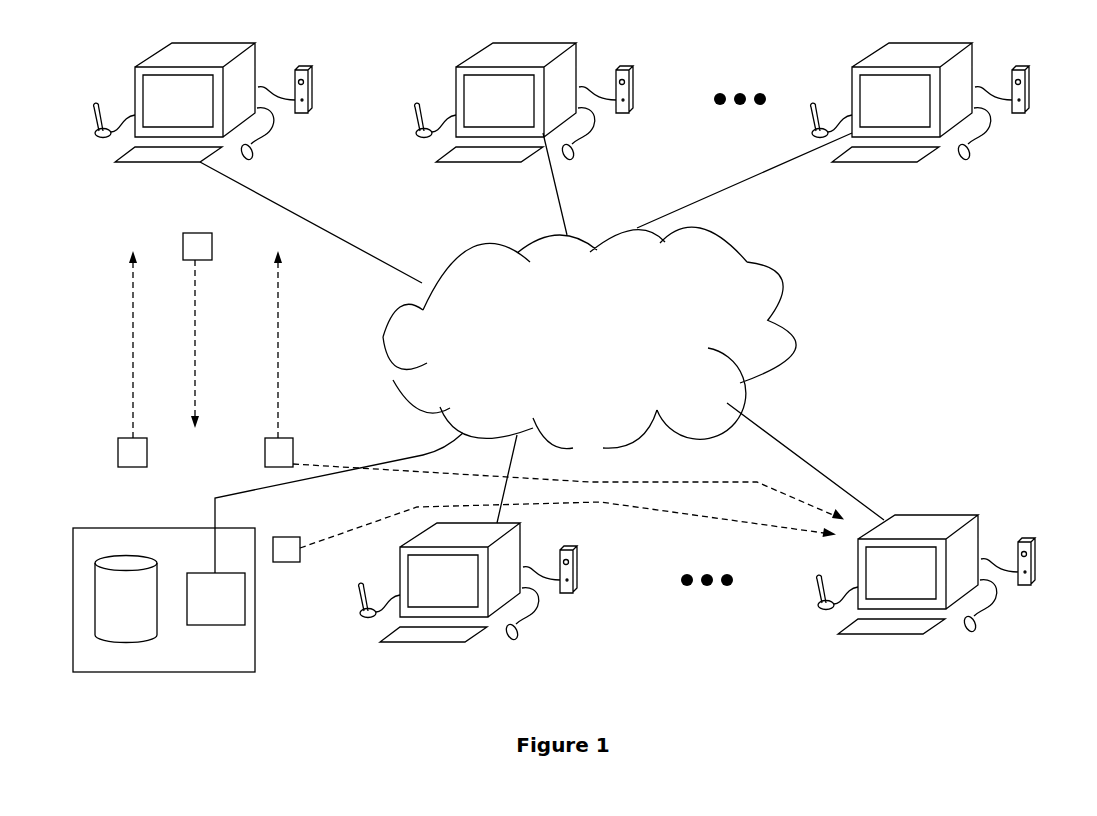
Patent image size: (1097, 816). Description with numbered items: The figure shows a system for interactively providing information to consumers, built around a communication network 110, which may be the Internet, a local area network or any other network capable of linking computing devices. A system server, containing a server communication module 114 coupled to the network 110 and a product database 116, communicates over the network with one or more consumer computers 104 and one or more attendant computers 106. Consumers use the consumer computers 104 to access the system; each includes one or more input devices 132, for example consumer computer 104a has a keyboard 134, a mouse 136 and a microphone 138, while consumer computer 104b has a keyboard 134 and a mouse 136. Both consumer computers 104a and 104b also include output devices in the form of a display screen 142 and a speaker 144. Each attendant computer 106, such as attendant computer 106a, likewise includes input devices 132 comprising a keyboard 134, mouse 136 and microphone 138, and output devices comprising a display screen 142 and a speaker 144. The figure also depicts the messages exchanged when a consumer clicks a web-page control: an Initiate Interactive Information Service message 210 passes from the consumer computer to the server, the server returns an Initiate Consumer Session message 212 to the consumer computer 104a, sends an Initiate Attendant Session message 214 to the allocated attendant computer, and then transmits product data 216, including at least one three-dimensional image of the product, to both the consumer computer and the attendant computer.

The consumer computer 104a is at (238, 43).
The consumer computer 104b is at (559, 43).
The consumer computer 104 is at (957, 43).
The attendant computer 106a is at (507, 666).
The attendant computer 106 is at (930, 662).
The communication network 110 is at (600, 346).
The server communication module 114 is at (207, 611).
The product database 116 is at (115, 613).
The input devices 132 is at (120, 161).
The keyboard 134 is at (165, 162).
The mouse 136 is at (253, 150).
The microphone 138 is at (104, 108).
The display screen 142 is at (165, 110).
The speaker 144 is at (312, 100).
The Initiate Interactive Information Service message 210 is at (212, 252).
The Initiate Consumer Session message 212 is at (118, 457).
The Initiate Attendant Session message 214 is at (292, 537).
The product data 216 is at (293, 455).